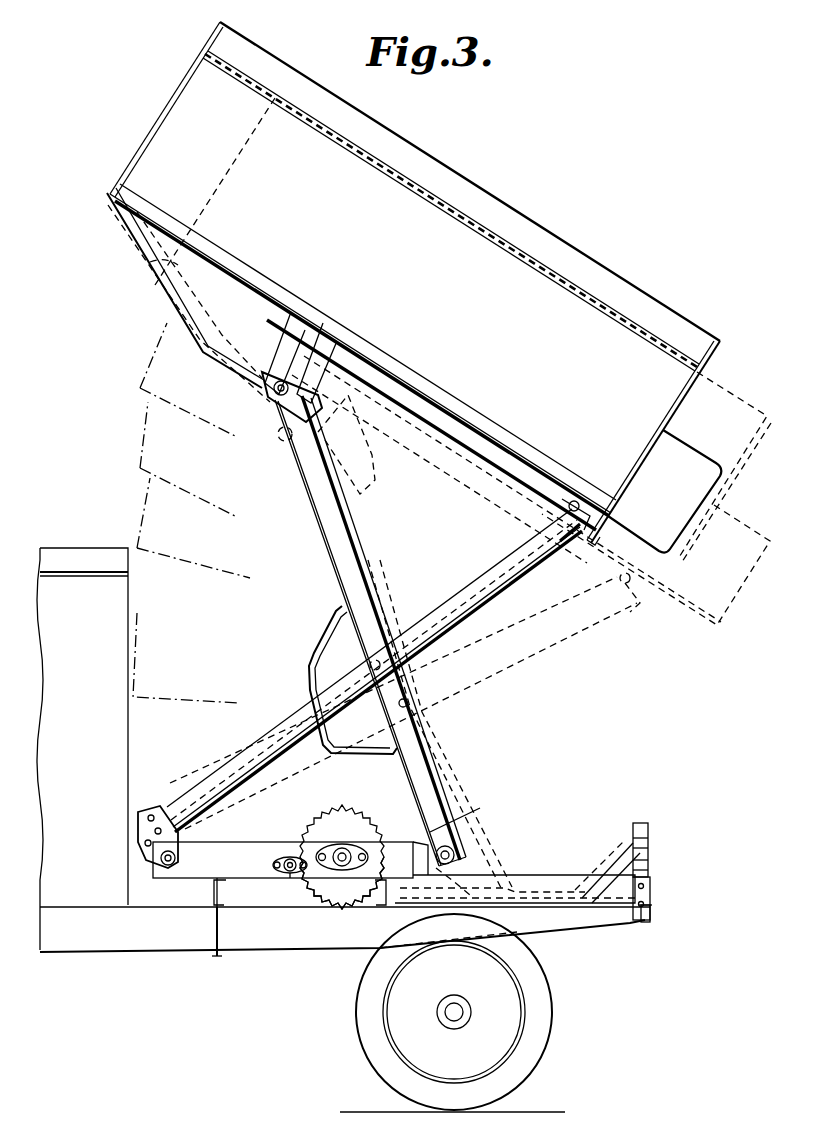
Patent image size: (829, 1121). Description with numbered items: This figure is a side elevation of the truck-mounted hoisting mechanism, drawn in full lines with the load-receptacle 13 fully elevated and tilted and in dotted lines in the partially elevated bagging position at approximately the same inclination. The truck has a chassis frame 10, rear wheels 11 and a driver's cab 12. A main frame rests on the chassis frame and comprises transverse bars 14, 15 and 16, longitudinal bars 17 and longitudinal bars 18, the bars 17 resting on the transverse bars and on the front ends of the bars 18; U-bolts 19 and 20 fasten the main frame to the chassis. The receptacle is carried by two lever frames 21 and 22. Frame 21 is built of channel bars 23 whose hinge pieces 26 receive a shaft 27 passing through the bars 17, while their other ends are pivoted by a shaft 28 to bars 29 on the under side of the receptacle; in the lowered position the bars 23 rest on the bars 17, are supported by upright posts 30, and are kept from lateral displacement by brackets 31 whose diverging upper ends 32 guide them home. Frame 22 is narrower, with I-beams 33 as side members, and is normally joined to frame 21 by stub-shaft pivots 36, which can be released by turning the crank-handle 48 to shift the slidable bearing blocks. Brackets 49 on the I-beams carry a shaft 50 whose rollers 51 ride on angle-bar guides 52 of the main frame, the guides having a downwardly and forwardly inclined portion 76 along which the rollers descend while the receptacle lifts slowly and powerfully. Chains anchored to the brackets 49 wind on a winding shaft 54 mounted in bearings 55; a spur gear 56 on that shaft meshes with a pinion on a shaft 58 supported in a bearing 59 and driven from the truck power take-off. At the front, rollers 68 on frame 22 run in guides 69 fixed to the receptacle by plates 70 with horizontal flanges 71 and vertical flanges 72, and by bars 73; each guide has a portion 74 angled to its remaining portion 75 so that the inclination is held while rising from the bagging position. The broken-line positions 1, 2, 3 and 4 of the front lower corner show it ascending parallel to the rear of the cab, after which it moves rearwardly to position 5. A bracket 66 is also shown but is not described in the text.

The successive position of the front lower corner 1 is at (133, 697).
The successive position of the front lower corner 2 is at (137, 548).
The successive position of the front lower corner 3 is at (140, 468).
The successive position of the front lower corner 4 is at (140, 388).
The position of the front lower corner 5 is at (152, 262).
The chassis frame 10 is at (272, 945).
The rear wheels 11 is at (548, 1003).
The driver's cab 12 is at (130, 585).
The load-receptacle 13 is at (591, 268).
The transverse bar 14 is at (213, 892).
The transverse bar 15 is at (386, 888).
The transverse bar 16 is at (652, 897).
The longitudinal bars 17 is at (229, 855).
The longitudinal bars 18 is at (572, 880).
The U-bolt 19 is at (215, 938).
The U-bolt 20 is at (648, 918).
The frame 21 is at (312, 722).
The frame 22 is at (370, 631).
The channel bars 23 is at (500, 585).
The hinge pieces 26 is at (152, 810).
The shaft 27 is at (176, 862).
The shaft 28 is at (576, 500).
The bars 29 is at (480, 455).
The upright posts 30 is at (650, 846).
The brackets 31 is at (650, 867).
The diverging upper ends 32 is at (650, 826).
The I-beams 33 is at (432, 762).
The pivots 36 is at (372, 672).
The crank-handle 48 is at (567, 542).
The brackets 49 is at (466, 810).
The shaft 50 is at (437, 848).
The rollers 51 is at (435, 871).
The angle bars 52 is at (534, 889).
The winding shaft 54 is at (340, 850).
The bearings 55 is at (333, 878).
The spur gear 56 is at (367, 820).
The shaft 58 is at (288, 858).
The bearing 59 is at (288, 874).
The guide bracket 66 is at (327, 745).
The rollers 68 is at (262, 404).
The guides 69 is at (283, 380).
The plates 70 is at (178, 296).
The horizontal flanges 71 is at (205, 258).
The vertical flanges 72 is at (295, 310).
The bars 73 is at (314, 392).
The portion of the guide 74 is at (228, 378).
The remaining portion of the guide 75 is at (132, 244).
The downwardly and forwardly inclined portion 76 is at (607, 871).